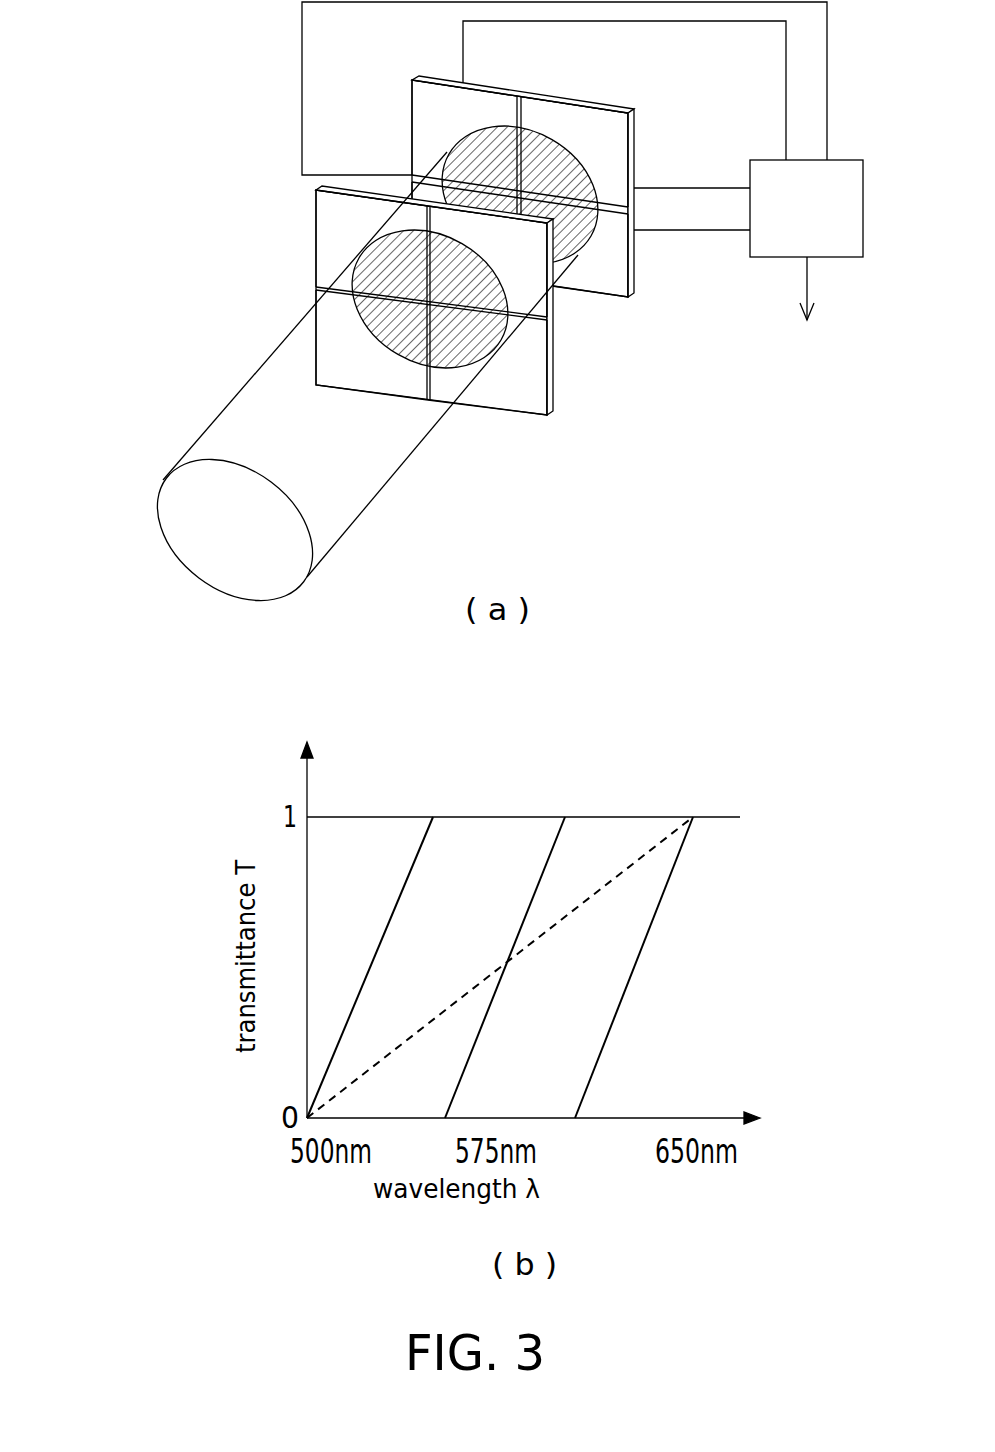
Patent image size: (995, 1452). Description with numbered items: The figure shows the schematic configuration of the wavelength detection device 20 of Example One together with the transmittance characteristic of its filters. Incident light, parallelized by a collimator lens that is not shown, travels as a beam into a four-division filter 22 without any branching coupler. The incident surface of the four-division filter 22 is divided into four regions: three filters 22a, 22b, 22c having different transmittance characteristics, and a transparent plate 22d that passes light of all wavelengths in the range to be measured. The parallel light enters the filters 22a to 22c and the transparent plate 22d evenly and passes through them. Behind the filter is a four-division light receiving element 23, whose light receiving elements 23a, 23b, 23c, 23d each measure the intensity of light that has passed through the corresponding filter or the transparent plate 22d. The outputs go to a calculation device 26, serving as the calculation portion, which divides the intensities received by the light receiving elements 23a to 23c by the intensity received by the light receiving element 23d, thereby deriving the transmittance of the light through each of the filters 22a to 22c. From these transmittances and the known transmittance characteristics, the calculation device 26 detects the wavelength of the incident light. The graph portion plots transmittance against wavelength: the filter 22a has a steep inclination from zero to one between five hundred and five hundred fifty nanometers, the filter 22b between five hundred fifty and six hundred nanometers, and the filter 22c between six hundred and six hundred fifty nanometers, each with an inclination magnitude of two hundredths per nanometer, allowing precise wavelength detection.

The wavelength detection device 20 is at (168, 149).
The four-division filter 22 is at (426, 335).
The filter 22a is at (328, 238).
The filter 22b is at (332, 357).
The filter 22c is at (533, 287).
The transparent plate 22d is at (525, 385).
The four-division light receiving element 23 is at (521, 166).
The light receiving element 23a is at (423, 97).
The light receiving element 23b is at (427, 195).
The light receiving element 23c is at (617, 143).
The light receiving element 23d is at (617, 250).
The calculation device 26 is at (755, 158).